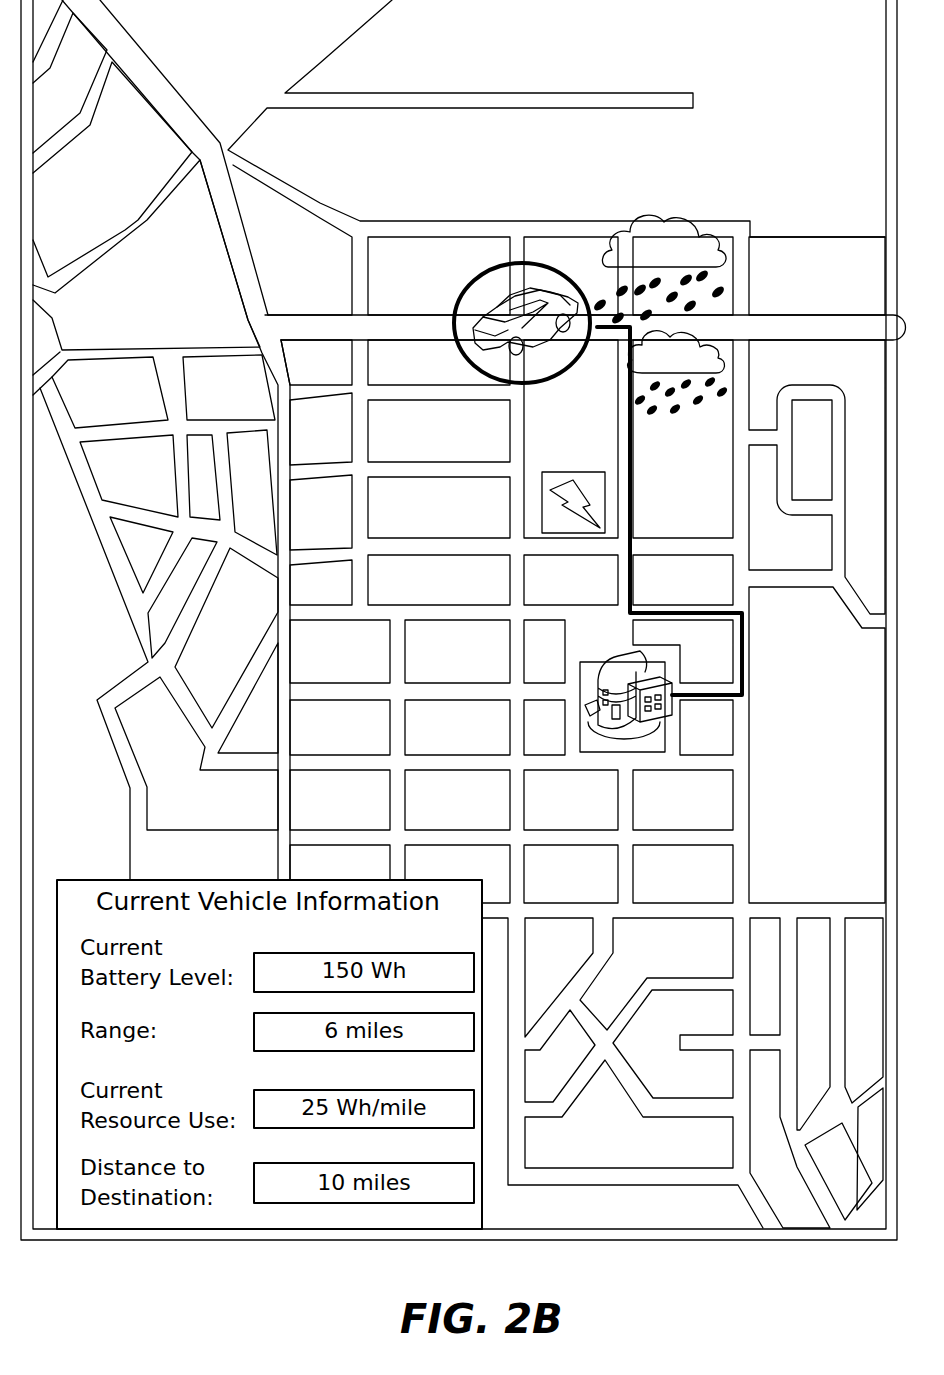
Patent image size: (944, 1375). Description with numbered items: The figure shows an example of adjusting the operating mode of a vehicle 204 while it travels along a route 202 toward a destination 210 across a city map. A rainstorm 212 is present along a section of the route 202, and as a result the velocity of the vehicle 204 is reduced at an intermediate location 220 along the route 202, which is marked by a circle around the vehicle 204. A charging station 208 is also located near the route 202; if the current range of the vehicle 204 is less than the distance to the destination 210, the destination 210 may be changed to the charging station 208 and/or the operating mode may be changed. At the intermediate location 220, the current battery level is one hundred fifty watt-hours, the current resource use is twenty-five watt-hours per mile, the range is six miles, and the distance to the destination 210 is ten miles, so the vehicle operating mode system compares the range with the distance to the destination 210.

The route 202 is at (636, 466).
The vehicle 204 is at (547, 290).
The charging station 208 is at (550, 472).
The destination 210 is at (600, 716).
The rainstorm 212 is at (660, 315).
The intermediate location 220 is at (459, 296).